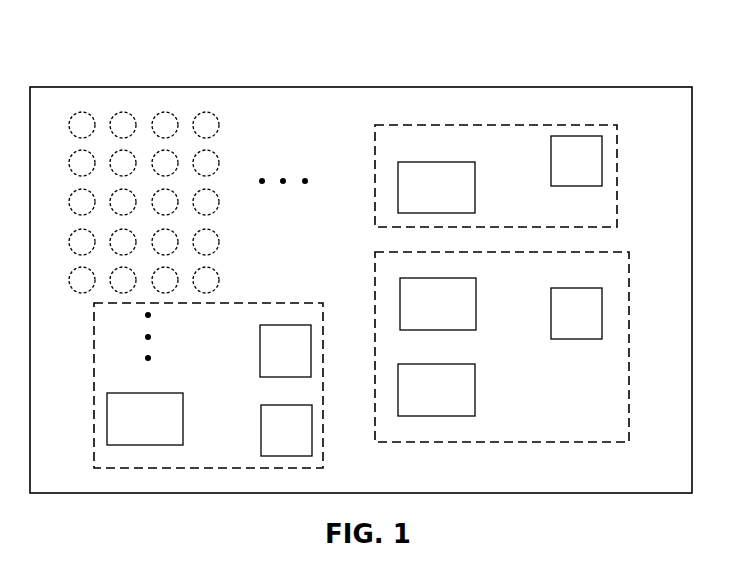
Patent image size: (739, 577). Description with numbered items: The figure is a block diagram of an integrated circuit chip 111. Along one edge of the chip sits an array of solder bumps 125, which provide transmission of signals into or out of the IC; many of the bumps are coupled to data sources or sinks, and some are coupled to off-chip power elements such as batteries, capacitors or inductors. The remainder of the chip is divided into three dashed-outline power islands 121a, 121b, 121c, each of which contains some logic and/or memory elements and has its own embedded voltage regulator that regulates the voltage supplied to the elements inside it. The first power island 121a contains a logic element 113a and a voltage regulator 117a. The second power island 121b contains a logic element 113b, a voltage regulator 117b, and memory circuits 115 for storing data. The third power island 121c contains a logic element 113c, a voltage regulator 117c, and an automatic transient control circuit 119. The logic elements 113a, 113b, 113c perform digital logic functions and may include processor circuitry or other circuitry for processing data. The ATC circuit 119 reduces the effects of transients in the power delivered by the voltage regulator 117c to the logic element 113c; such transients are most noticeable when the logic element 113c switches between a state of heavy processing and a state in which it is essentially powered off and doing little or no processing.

The integrated circuit chip 111 is at (590, 87).
The solder bumps 125 is at (218, 161).
The power island 121a is at (617, 200).
The logic element 113a is at (437, 162).
The voltage regulator 117a is at (602, 162).
The power island 121b is at (629, 417).
The logic element 113b is at (476, 303).
The voltage regulator 117b is at (602, 317).
The memory circuits 115 is at (475, 387).
The power island 121c is at (210, 468).
The automatic transient control (ATC) circuit 119 is at (285, 325).
The logic element 113c is at (183, 418).
The voltage regulator 117c is at (312, 430).